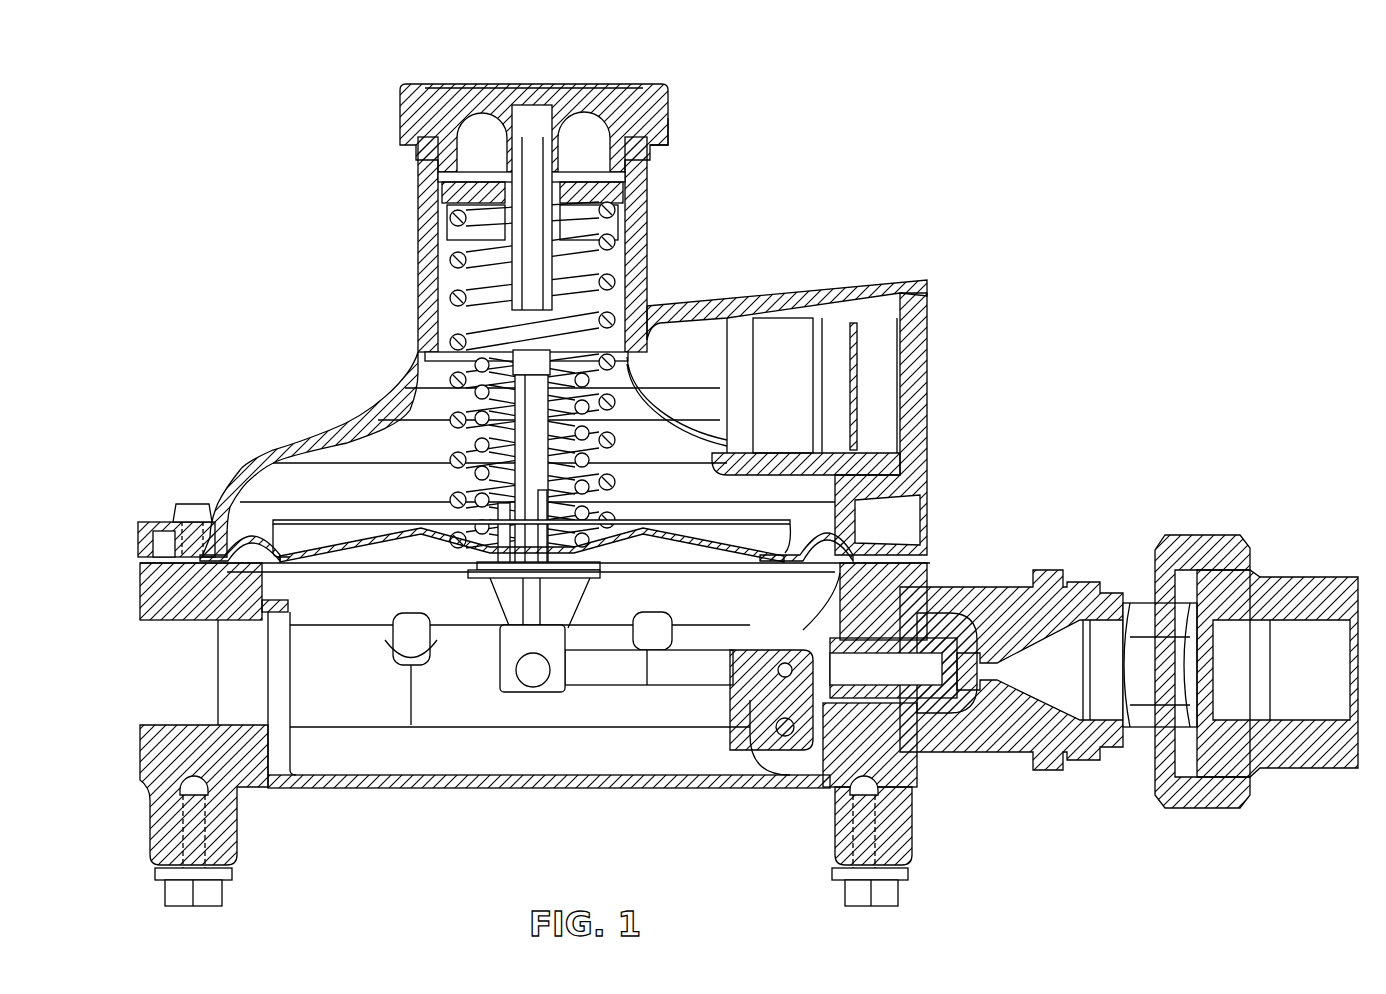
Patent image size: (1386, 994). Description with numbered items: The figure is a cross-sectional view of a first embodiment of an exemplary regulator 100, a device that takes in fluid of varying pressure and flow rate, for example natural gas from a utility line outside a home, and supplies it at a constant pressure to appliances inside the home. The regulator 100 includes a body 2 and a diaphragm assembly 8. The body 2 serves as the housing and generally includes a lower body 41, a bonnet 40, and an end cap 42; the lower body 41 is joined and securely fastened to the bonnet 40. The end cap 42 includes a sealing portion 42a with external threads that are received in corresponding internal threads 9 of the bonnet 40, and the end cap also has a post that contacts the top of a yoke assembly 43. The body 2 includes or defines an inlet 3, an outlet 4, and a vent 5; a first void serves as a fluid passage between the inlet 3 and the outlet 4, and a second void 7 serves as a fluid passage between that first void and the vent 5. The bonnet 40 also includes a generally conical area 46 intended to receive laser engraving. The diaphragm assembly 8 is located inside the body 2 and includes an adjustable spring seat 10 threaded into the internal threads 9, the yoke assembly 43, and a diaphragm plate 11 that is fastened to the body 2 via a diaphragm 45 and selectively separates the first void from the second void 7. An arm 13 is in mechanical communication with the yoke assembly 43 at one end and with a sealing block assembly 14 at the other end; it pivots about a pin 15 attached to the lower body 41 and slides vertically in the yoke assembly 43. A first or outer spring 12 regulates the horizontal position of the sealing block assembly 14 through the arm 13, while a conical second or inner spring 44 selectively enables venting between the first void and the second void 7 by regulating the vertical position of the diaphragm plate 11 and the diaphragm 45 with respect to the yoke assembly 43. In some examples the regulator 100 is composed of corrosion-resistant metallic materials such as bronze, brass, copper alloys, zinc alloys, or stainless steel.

The regulator 100 is at (717, 460).
The body 2 is at (562, 406).
The inlet 3 is at (950, 603).
The outlet 4 is at (503, 734).
The vent 5 is at (928, 320).
The second void 7 is at (650, 440).
The diaphragm assembly 8 is at (452, 670).
The internal threads 9 is at (648, 196).
The adjustable spring seat 10 is at (447, 190).
The diaphragm plate 11 is at (295, 548).
The outer spring 12 is at (440, 380).
The arm 13 is at (622, 672).
The sealing block assembly 14 is at (927, 700).
The pin 15 is at (782, 737).
The bonnet 40 is at (228, 490).
The lower body 41 is at (340, 780).
The end cap 42 is at (556, 84).
The sealing portion 42a is at (670, 124).
The yoke assembly 43 is at (470, 614).
The inner spring 44 is at (465, 442).
The diaphragm 45 is at (258, 540).
The conical area 46 is at (283, 448).